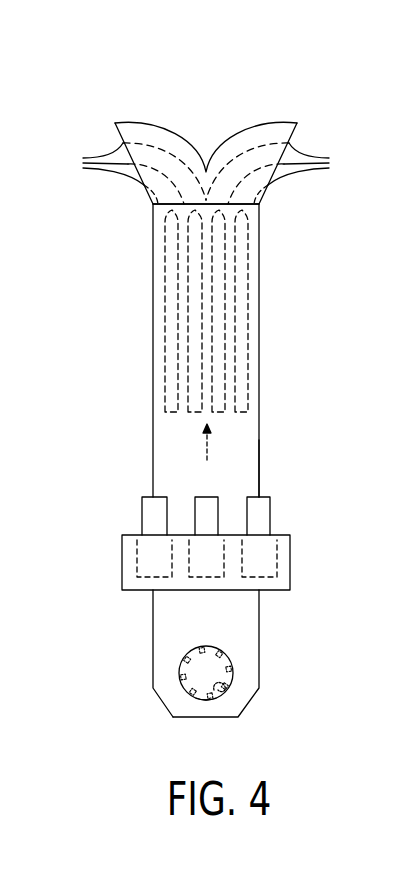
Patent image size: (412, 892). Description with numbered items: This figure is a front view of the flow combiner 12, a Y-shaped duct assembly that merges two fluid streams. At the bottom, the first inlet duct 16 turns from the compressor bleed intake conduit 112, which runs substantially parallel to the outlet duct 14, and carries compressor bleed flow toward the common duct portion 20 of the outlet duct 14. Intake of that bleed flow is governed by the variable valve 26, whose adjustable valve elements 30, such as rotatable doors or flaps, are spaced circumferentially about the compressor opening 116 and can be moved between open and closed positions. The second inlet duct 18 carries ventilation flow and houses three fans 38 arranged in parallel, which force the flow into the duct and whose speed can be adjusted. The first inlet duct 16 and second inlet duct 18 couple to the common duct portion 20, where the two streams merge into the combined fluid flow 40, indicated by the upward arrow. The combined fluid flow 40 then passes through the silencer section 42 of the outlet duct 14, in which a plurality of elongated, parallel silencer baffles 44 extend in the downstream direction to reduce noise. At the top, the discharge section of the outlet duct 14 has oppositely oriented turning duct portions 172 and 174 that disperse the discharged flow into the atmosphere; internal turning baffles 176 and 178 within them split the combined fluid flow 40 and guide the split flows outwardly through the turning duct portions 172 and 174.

The flow combiner 12 is at (317, 96).
The outlet duct 14 is at (153, 272).
The first inlet duct 16 is at (259, 612).
The second inlet duct 18 is at (290, 562).
The common duct portion 20 is at (233, 488).
The variable valve 26 is at (236, 651).
The adjustable valve elements 30 is at (226, 690).
The fans 38 is at (206, 497).
The combined fluid flow 40 is at (203, 447).
The silencer section 42 is at (267, 312).
The silencer baffles 44 is at (247, 232).
The compressor bleed intake conduit 112 is at (153, 640).
The compressor opening 116 is at (205, 700).
The turning duct portion 172 is at (163, 121).
The turning duct portion 174 is at (249, 121).
The internal turning baffle 176 is at (114, 173).
The internal turning baffle 178 is at (298, 173).